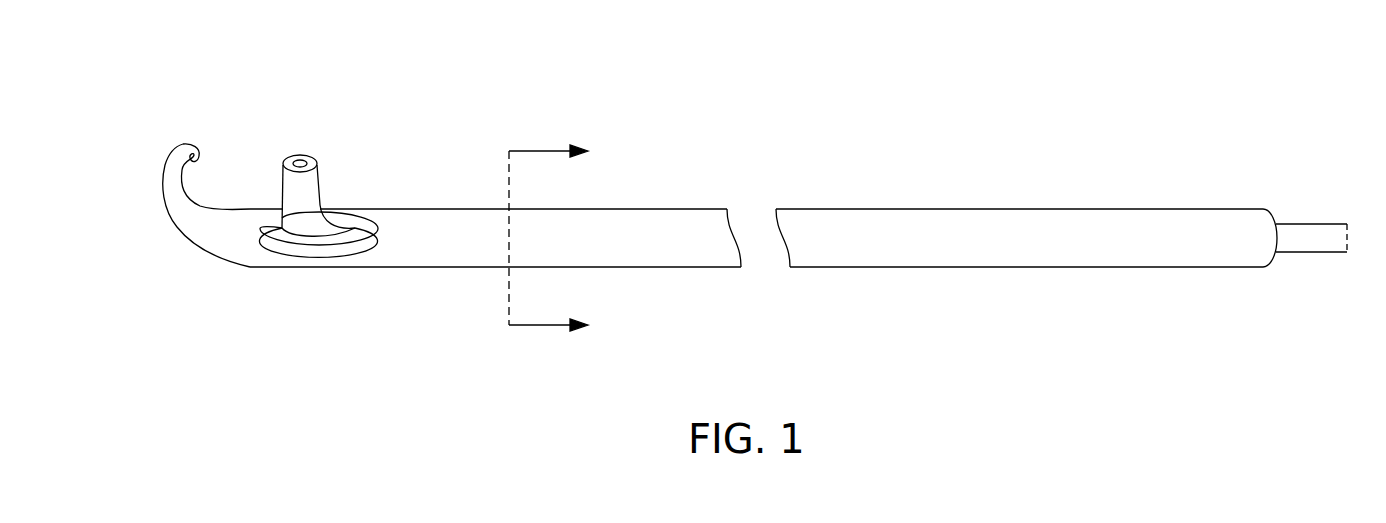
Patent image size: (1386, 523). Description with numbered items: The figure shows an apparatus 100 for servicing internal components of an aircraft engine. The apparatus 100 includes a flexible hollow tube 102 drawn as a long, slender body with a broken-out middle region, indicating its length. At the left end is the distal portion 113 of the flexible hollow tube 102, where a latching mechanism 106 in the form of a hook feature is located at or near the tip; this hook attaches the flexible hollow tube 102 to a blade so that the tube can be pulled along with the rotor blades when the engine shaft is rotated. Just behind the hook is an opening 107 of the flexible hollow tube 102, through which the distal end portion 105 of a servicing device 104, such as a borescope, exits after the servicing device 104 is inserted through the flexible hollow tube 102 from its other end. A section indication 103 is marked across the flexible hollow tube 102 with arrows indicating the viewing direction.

The apparatus 100 is at (1194, 86).
The flexible hollow tube 102 is at (684, 221).
The section line 103 is at (549, 150).
The servicing device 104 is at (1312, 235).
The distal end portion 105 is at (310, 190).
The latching mechanism 106 is at (187, 142).
The opening 107 is at (338, 240).
The distal portion 113 is at (421, 268).